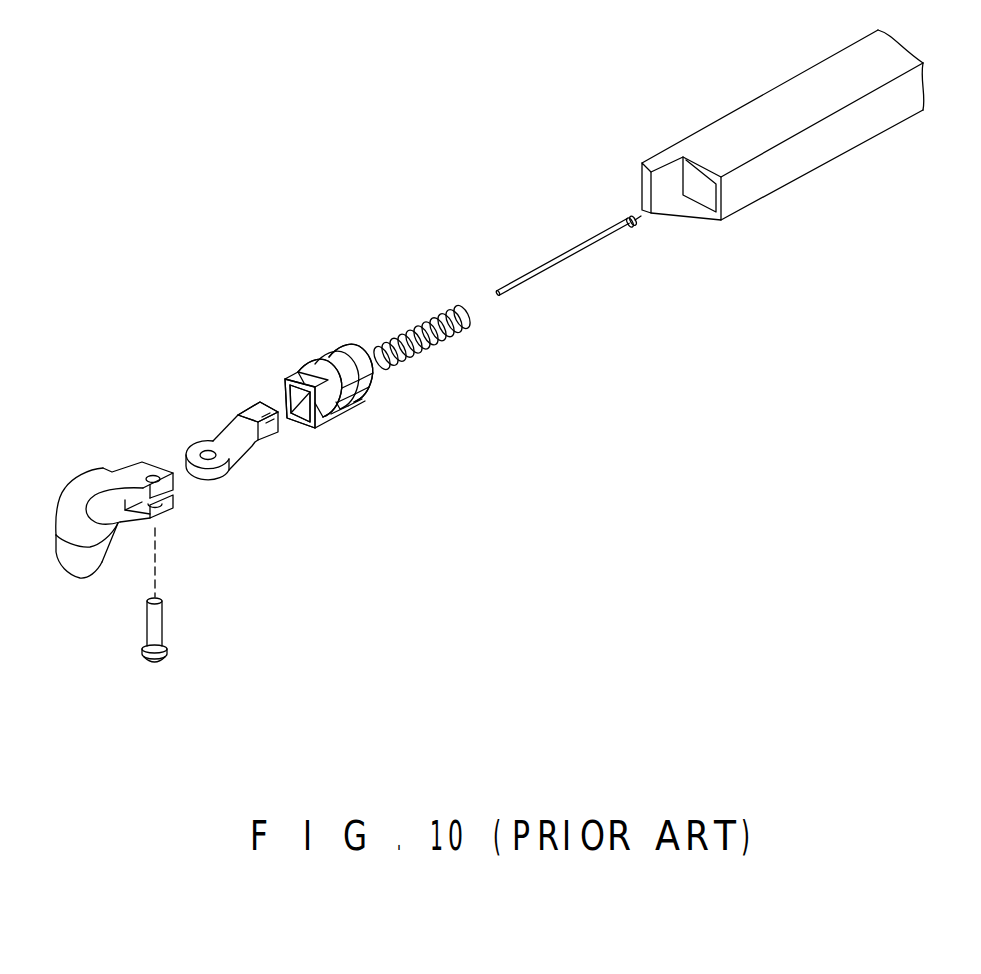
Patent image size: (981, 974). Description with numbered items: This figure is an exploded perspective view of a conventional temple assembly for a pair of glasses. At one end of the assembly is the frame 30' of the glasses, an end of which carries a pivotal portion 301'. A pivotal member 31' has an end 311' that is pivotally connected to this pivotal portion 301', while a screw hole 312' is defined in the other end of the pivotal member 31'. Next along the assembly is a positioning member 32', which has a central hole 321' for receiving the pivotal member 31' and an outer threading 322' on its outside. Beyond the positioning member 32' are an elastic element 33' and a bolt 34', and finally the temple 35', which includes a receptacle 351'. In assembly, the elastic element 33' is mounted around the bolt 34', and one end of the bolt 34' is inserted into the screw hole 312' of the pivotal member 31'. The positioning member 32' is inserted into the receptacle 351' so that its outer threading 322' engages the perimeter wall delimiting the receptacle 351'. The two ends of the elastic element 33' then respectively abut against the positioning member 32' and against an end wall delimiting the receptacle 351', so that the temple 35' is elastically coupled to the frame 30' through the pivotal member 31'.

The frame 30' is at (101, 570).
The pivotal portion 301' is at (154, 419).
The pivotal member 31' is at (243, 483).
The end 311' is at (233, 513).
The screw hole 312' is at (240, 375).
The positioning member 32' is at (351, 426).
The central hole 321' is at (318, 455).
The outer threading 322' is at (309, 352).
The elastic element 33' is at (448, 371).
The bolt 34' is at (569, 291).
The temple 35' is at (783, 159).
The receptacle 351' is at (699, 249).